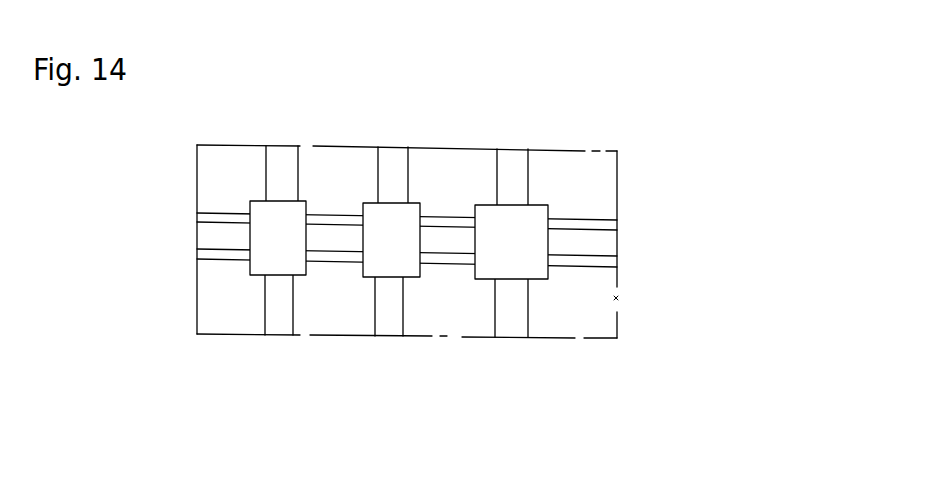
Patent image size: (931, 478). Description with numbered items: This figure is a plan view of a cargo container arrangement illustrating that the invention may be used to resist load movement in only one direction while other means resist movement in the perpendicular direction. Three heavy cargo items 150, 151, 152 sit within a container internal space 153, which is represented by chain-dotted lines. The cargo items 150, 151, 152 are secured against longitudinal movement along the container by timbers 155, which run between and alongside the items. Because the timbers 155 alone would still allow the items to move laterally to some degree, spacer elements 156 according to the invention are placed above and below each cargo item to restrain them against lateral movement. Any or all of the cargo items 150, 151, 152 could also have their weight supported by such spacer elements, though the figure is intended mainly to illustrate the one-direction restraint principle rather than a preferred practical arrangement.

The heavy cargo item 150 is at (293, 213).
The heavy cargo item 151 is at (384, 262).
The heavy cargo item 152 is at (550, 213).
The container internal space 153 is at (560, 150).
The timbers 155 is at (227, 212).
The spacer elements 156 is at (270, 163).